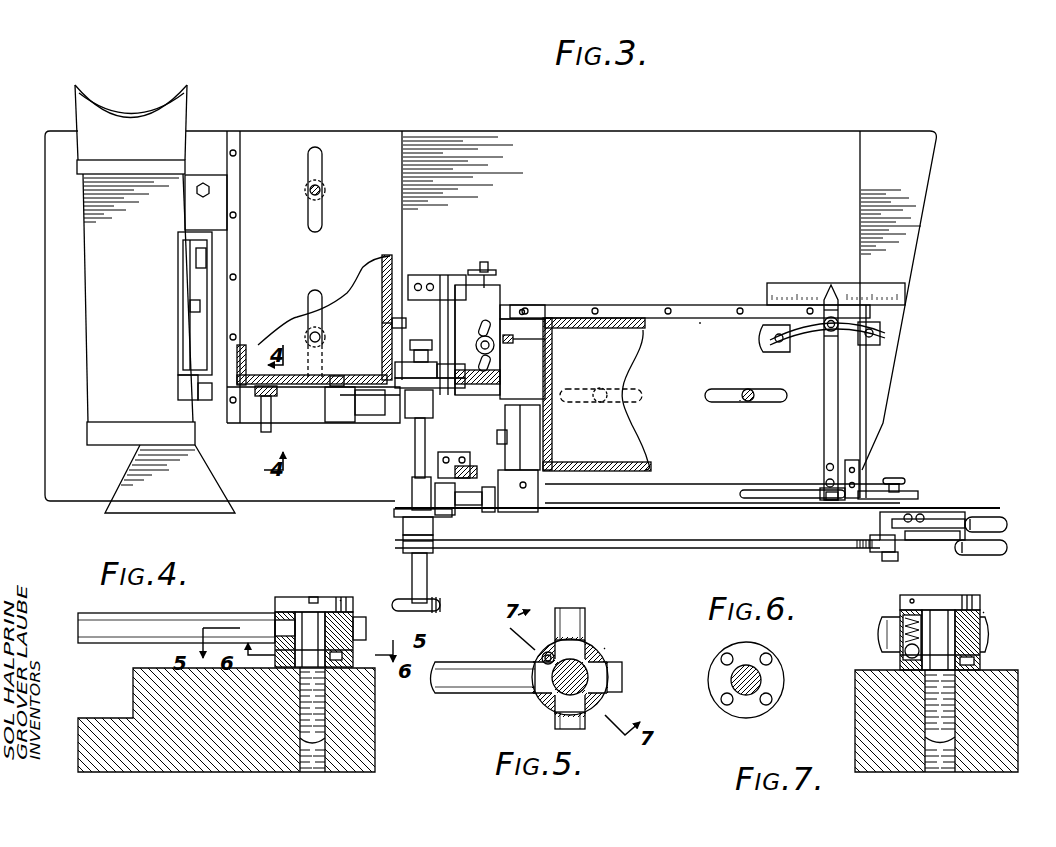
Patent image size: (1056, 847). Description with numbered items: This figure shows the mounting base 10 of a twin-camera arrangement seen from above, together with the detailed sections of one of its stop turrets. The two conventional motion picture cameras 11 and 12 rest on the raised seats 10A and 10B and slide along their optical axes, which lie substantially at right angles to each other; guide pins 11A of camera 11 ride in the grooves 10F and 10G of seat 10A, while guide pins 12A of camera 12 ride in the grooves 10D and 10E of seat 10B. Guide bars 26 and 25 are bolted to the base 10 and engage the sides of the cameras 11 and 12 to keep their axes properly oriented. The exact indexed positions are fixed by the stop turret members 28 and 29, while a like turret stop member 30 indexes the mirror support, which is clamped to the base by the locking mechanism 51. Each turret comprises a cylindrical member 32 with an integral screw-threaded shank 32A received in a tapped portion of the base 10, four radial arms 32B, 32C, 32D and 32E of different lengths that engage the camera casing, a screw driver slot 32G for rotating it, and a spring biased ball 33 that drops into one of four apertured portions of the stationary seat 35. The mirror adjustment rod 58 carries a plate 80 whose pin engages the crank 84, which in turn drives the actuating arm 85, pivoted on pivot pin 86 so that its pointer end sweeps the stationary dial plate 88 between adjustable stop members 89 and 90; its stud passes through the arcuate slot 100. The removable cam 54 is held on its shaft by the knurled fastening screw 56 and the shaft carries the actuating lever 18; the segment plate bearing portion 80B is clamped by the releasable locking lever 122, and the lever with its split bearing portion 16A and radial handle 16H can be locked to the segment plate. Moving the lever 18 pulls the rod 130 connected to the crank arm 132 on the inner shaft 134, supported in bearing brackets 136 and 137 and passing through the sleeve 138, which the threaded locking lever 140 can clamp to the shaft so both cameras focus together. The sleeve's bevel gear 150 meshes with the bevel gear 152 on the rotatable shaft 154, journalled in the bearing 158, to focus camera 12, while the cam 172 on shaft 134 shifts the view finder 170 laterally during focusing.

In FIG. 3, the mounting base 10 is at (774, 146).
In FIG. 4, the mounting base 10 is at (138, 693).
In FIG. 7, the mounting base 10 is at (862, 750).
In FIG. 3, the raised seat 10A is at (392, 142).
In FIG. 3, the raised seat 10B is at (682, 323).
In FIG. 3, the groove 10D is at (635, 400).
In FIG. 3, the groove 10E is at (725, 402).
In FIG. 3, the groove 10F is at (306, 297).
In FIG. 3, the groove 10G is at (322, 150).
In FIG. 3, the motion picture camera 11 is at (396, 272).
In FIG. 3, the guide pin 11A is at (326, 190).
In FIG. 3, the motion picture camera 12 is at (566, 318).
In FIG. 3, the guide pin 12A is at (600, 388).
In FIG. 3, the split bearing portion 16A is at (880, 542).
In FIG. 3, the handle 16H is at (990, 519).
In FIG. 3, the actuating lever 18 is at (998, 550).
In FIG. 3, the guide bar 25 is at (631, 305).
In FIG. 3, the guide bar 26 is at (241, 186).
In FIG. 3, the stop turret member 28 is at (509, 345).
In FIG. 3, the stop turret member 29 is at (272, 400).
In FIG. 4, the stop turret member 29 is at (342, 600).
In FIG. 5, the stop turret member 29 is at (606, 648).
In FIG. 7, the stop turret member 29 is at (985, 612).
In FIG. 3, the stop turret member 30 is at (490, 267).
In FIG. 4, the cylindrical member 32 is at (300, 617).
In FIG. 5, the cylindrical member 32 is at (548, 695).
In FIG. 7, the cylindrical member 32 is at (945, 626).
In FIG. 4, the screw-threaded shank 32A is at (325, 720).
In FIG. 6, the screw-threaded shank 32A is at (748, 668).
In FIG. 7, the screw-threaded shank 32A is at (925, 716).
In FIG. 4, the arm 32B is at (132, 613).
In FIG. 5, the arm 32B is at (484, 686).
In FIG. 5, the arm 32C is at (574, 616).
In FIG. 7, the arm 32C is at (882, 630).
In FIG. 4, the arm 32D is at (367, 628).
In FIG. 5, the arm 32D is at (622, 670).
In FIG. 7, the arm 32D is at (990, 640).
In FIG. 5, the arm 32E is at (555, 724).
In FIG. 4, the screw driver slot 32G is at (314, 597).
In FIG. 7, the screw driver slot 32G is at (913, 597).
In FIG. 7, the spring biased ball 33 is at (905, 652).
In FIG. 4, the seat 35 is at (355, 657).
In FIG. 6, the seat 35 is at (710, 684).
In FIG. 7, the seat 35 is at (982, 660).
In FIG. 3, the locking mechanism 51 is at (492, 332).
In FIG. 3, the cam 54 is at (918, 494).
In FIG. 3, the knurled fastening screw 56 is at (897, 478).
In FIG. 3, the mirror adjustment rod 58 is at (755, 489).
In FIG. 3, the plate 80 is at (945, 519).
In FIG. 3, the segment plate bearing portion 80B is at (882, 522).
In FIG. 3, the crank 84 is at (820, 492).
In FIG. 3, the actuating arm 85 is at (840, 378).
In FIG. 3, the pivot pin 86 is at (826, 467).
In FIG. 3, the stationary dial plate 88 is at (800, 284).
In FIG. 3, the adjustable stop member 89 is at (777, 353).
In FIG. 3, the adjustable stop member 90 is at (880, 330).
In FIG. 3, the arcuate slot 100 is at (808, 336).
In FIG. 3, the releasable locking lever 122 is at (922, 516).
In FIG. 3, the rod 130 is at (790, 548).
In FIG. 3, the crank arm 132 is at (403, 547).
In FIG. 3, the inner shaft 134 is at (425, 434).
In FIG. 3, the bearing bracket 136 is at (403, 524).
In FIG. 3, the bearing bracket 137 is at (433, 408).
In FIG. 3, the sleeve 138 is at (427, 574).
In FIG. 3, the threaded locking lever 140 is at (400, 598).
In FIG. 3, the bevel gear 150 is at (408, 509).
In FIG. 3, the bevel gear 152 is at (416, 481).
In FIG. 3, the rotatable shaft 154 is at (485, 507).
In FIG. 3, the bearing 158 is at (510, 510).
In FIG. 3, the view finder 170 is at (82, 339).
In FIG. 3, the cam 172 is at (395, 368).